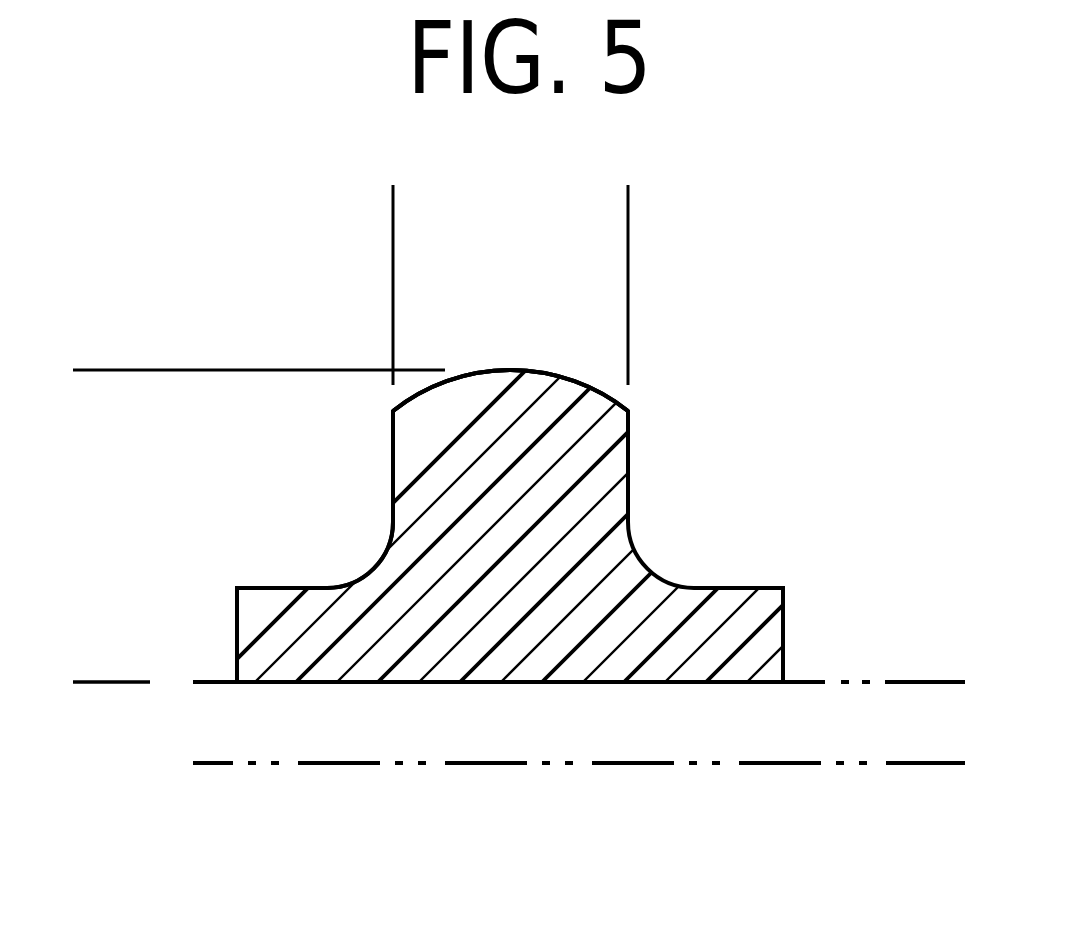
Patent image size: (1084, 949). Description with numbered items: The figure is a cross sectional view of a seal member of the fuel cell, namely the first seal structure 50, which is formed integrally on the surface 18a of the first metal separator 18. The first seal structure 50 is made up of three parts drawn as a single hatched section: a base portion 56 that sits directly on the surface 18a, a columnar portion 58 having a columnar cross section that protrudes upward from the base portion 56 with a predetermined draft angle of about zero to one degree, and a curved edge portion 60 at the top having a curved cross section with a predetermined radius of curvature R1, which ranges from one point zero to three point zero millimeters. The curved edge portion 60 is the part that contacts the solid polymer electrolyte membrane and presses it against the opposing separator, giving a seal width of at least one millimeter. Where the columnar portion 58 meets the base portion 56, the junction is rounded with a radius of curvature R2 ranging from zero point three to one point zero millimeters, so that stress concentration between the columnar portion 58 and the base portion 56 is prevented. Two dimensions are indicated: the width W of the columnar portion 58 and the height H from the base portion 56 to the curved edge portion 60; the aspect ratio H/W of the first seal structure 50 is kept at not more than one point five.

The first seal structure 50 is at (706, 296).
The curved edge portion 60 is at (561, 372).
The columnar portion 58 is at (632, 457).
The base portion 56 is at (724, 612).
The surface of the first metal separator 18a is at (903, 680).
The first metal separator 18 is at (767, 722).
The radius of curvature of the curved edge portion R1 is at (508, 390).
The radius of curvature of the base portion R2 is at (355, 560).
The width of the columnar portion W is at (621, 215).
The height from the base portion to the curved edge portion H is at (105, 380).